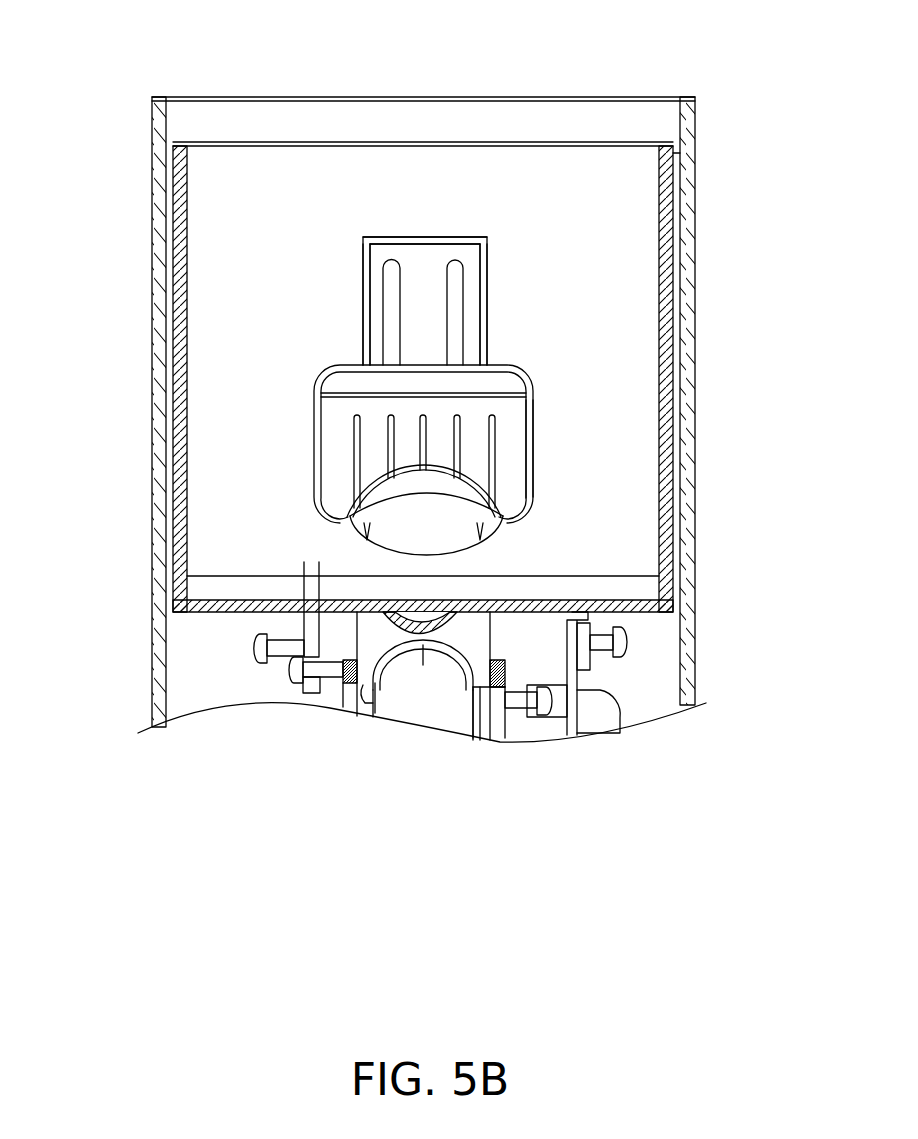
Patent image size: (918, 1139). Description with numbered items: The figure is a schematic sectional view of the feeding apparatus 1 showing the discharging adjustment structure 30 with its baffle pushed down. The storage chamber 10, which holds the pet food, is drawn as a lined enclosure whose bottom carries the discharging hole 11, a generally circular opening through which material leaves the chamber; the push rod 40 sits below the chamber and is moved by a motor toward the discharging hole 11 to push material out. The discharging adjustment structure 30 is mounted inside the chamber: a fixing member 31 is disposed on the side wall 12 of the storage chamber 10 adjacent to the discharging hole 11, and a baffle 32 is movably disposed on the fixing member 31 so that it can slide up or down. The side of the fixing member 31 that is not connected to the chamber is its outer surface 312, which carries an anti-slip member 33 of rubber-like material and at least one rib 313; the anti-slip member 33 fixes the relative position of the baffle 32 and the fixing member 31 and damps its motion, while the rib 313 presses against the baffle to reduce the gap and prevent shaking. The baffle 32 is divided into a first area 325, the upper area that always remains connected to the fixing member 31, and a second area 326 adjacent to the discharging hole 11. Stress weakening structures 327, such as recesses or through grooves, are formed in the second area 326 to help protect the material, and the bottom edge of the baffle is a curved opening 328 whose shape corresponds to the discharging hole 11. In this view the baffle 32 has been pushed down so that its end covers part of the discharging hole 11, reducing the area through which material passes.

The feeding apparatus 1 is at (97, 47).
The storage chamber 10 is at (645, 358).
The discharging hole 11 is at (473, 548).
The side wall 12 is at (631, 272).
The discharging adjustment structure 30 is at (298, 215).
The fixing member 31 is at (400, 238).
The outer surface 312 is at (434, 250).
The rib 313 is at (365, 333).
The anti-slip member 33 is at (392, 278).
The baffle 32 is at (330, 424).
The first area 325 is at (513, 383).
The second area 326 is at (513, 457).
The stress weakening structure 327 is at (350, 452).
The curved opening 328 is at (355, 488).
The push rod 40 is at (430, 690).